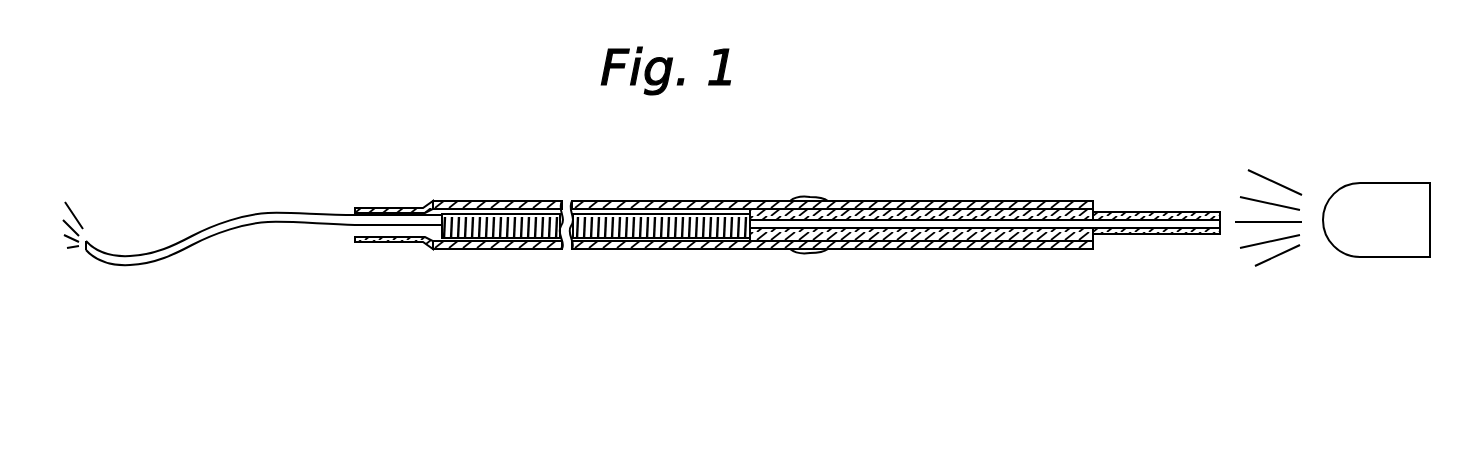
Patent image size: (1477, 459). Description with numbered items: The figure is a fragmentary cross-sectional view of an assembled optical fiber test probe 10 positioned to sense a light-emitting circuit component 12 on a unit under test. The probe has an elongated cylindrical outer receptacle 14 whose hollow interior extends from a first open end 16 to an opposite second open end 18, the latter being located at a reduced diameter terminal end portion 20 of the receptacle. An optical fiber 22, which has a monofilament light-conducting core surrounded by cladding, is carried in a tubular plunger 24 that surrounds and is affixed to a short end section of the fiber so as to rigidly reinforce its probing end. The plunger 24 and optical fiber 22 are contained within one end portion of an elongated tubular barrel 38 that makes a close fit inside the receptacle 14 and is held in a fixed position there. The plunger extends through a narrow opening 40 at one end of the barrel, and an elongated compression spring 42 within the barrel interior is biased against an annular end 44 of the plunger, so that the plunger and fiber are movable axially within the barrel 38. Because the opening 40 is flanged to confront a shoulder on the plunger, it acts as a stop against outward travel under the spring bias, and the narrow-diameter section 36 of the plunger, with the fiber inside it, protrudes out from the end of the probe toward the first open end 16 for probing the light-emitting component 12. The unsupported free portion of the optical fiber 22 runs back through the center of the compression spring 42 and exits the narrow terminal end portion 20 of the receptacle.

The optical fiber test probe 10 is at (752, 157).
The light-emitting circuit component 12 is at (1357, 198).
The outer receptacle 14 is at (620, 247).
The first open end 16 is at (1095, 203).
The second open end 18 is at (356, 238).
The reduced diameter terminal end portion 20 is at (412, 160).
The optical fiber 22 is at (192, 250).
The tubular plunger 24 is at (943, 232).
The narrow O.D. section 36 is at (1187, 234).
The tubular barrel 38 is at (524, 242).
The narrow opening 40 is at (1092, 247).
The compression spring 42 is at (536, 160).
The annular end 44 is at (745, 247).